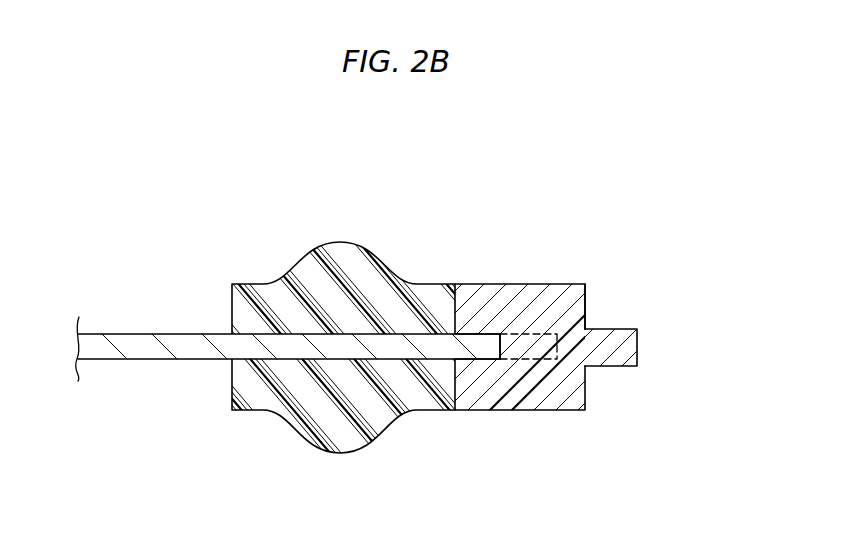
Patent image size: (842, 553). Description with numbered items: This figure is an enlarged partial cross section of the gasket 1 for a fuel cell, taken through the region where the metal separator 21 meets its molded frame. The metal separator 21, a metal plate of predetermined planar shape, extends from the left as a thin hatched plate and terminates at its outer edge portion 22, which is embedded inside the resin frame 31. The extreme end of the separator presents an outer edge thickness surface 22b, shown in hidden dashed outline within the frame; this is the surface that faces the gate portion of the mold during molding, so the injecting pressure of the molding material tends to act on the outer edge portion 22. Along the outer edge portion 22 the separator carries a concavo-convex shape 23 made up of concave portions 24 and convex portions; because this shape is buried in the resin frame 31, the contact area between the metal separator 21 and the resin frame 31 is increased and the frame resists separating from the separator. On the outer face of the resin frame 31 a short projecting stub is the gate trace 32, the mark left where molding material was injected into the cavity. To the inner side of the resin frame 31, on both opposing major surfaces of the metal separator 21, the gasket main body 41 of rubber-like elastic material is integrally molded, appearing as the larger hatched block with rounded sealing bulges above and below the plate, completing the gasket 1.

The gasket for a fuel cell 1 is at (243, 243).
The metal separator 21 is at (125, 347).
The outer edge portion 22 is at (485, 350).
The outer edge thickness surface 22b is at (557, 352).
The concavo-convex shape 23 is at (510, 331).
The concave portion 24 is at (585, 307).
The resin frame 31 is at (500, 307).
The gate trace 32 is at (638, 342).
The gasket main body 41 is at (364, 273).